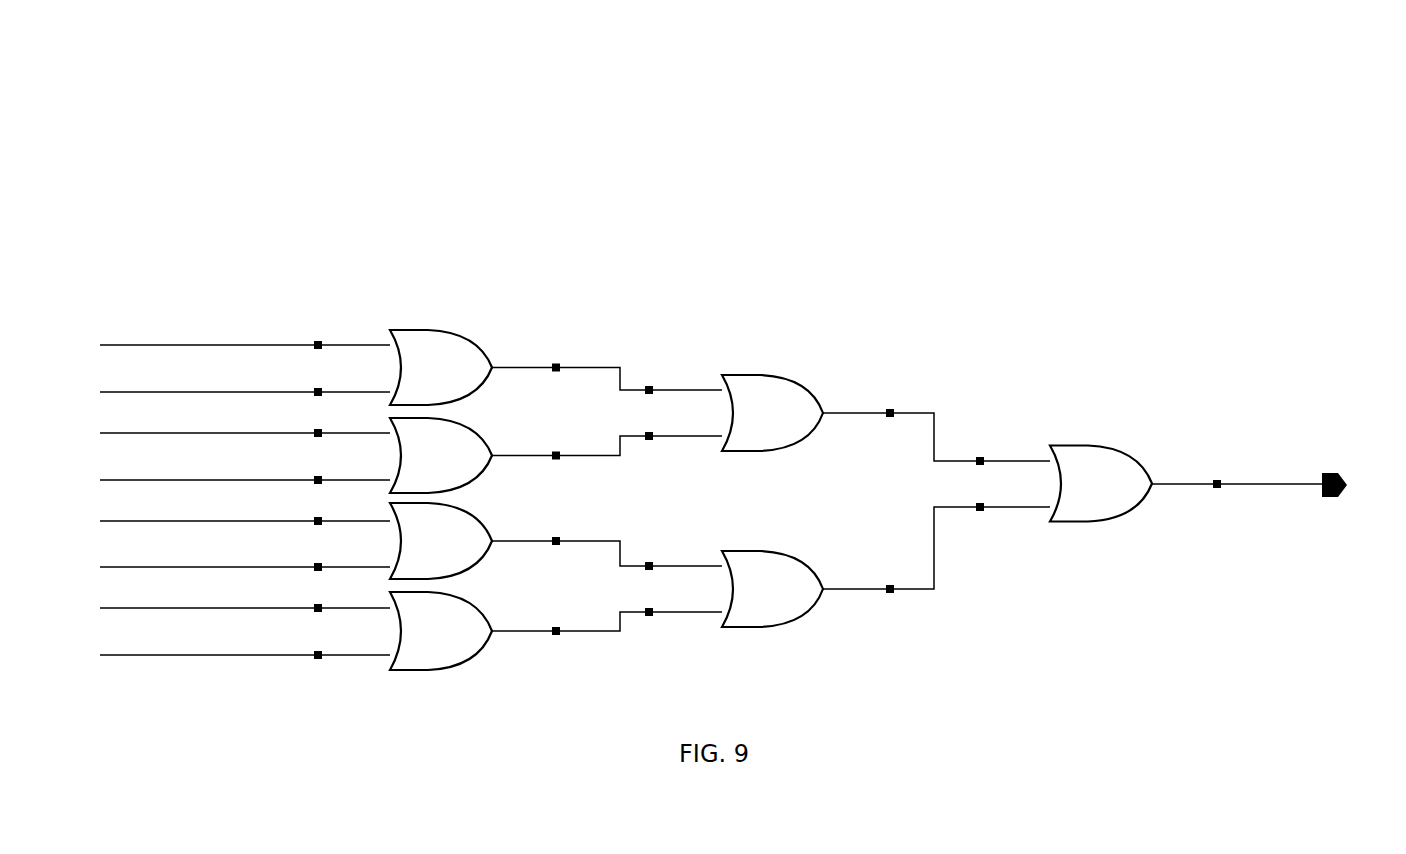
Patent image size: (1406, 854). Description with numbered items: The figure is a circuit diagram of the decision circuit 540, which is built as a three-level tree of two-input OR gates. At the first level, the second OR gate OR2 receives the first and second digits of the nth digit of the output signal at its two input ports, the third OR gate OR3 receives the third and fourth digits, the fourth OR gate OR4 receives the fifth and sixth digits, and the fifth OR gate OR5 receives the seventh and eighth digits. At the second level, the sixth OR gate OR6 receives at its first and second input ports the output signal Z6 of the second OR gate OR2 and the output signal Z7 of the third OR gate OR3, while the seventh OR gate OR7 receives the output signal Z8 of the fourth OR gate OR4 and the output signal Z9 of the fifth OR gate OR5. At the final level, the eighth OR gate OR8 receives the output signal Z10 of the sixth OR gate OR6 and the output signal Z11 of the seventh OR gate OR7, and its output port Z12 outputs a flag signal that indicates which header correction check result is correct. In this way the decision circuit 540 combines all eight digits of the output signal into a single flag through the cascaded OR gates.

The decision circuit 540 is at (1198, 132).
The second OR gate OR2 is at (471, 369).
The third OR gate OR3 is at (471, 457).
The fourth OR gate OR4 is at (471, 544).
The fifth OR gate OR5 is at (471, 633).
The sixth OR gate OR6 is at (801, 417).
The seventh OR gate OR7 is at (802, 591).
The eighth OR gate OR8 is at (1131, 487).
The output signal of the second OR gate Z6 is at (607, 375).
The output signal of the third OR gate Z7 is at (607, 448).
The output signal of the fourth OR gate Z8 is at (607, 550).
The output signal of the fifth OR gate Z9 is at (607, 624).
The output signal of the sixth OR gate Z10 is at (936, 433).
The output signal of the seventh OR gate Z11 is at (936, 550).
The output port of the eighth OR gate Z12 is at (1270, 484).